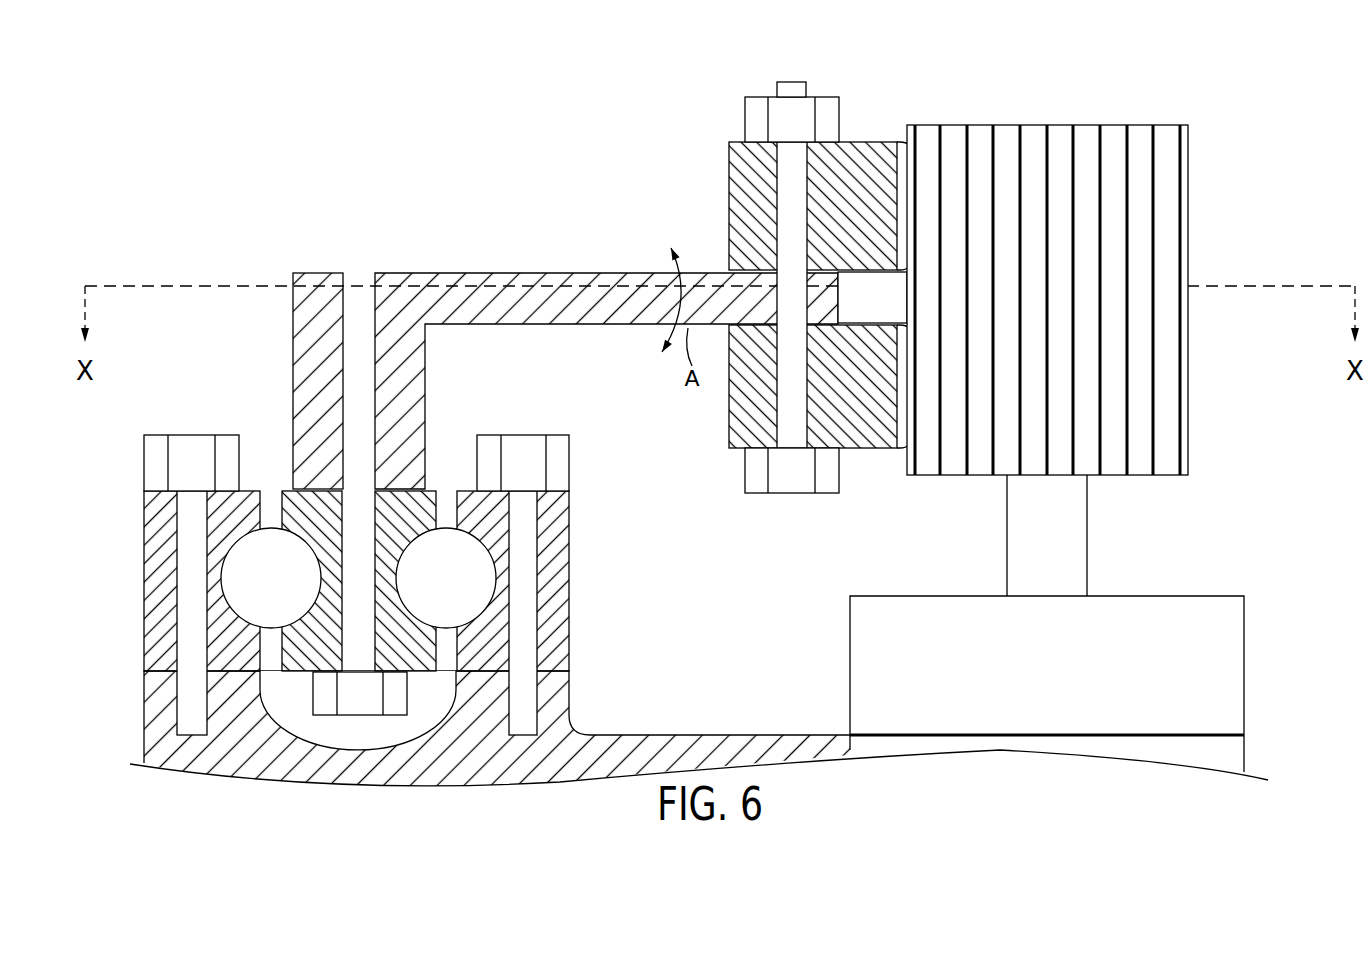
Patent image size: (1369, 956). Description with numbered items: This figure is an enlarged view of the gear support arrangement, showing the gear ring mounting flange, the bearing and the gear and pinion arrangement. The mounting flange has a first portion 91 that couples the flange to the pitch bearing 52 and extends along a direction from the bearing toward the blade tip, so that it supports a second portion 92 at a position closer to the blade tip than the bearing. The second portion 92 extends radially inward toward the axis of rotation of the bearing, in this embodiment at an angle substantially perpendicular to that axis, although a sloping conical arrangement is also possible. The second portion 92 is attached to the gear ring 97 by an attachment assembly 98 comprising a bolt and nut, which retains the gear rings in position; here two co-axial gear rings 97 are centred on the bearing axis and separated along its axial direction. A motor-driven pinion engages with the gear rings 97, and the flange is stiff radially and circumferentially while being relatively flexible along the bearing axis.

The pitch bearing 52 is at (122, 546).
The first portion 91 is at (316, 348).
The second portion 92 is at (571, 283).
The gear ring 97 is at (902, 153).
The attachment assembly 98 is at (793, 80).